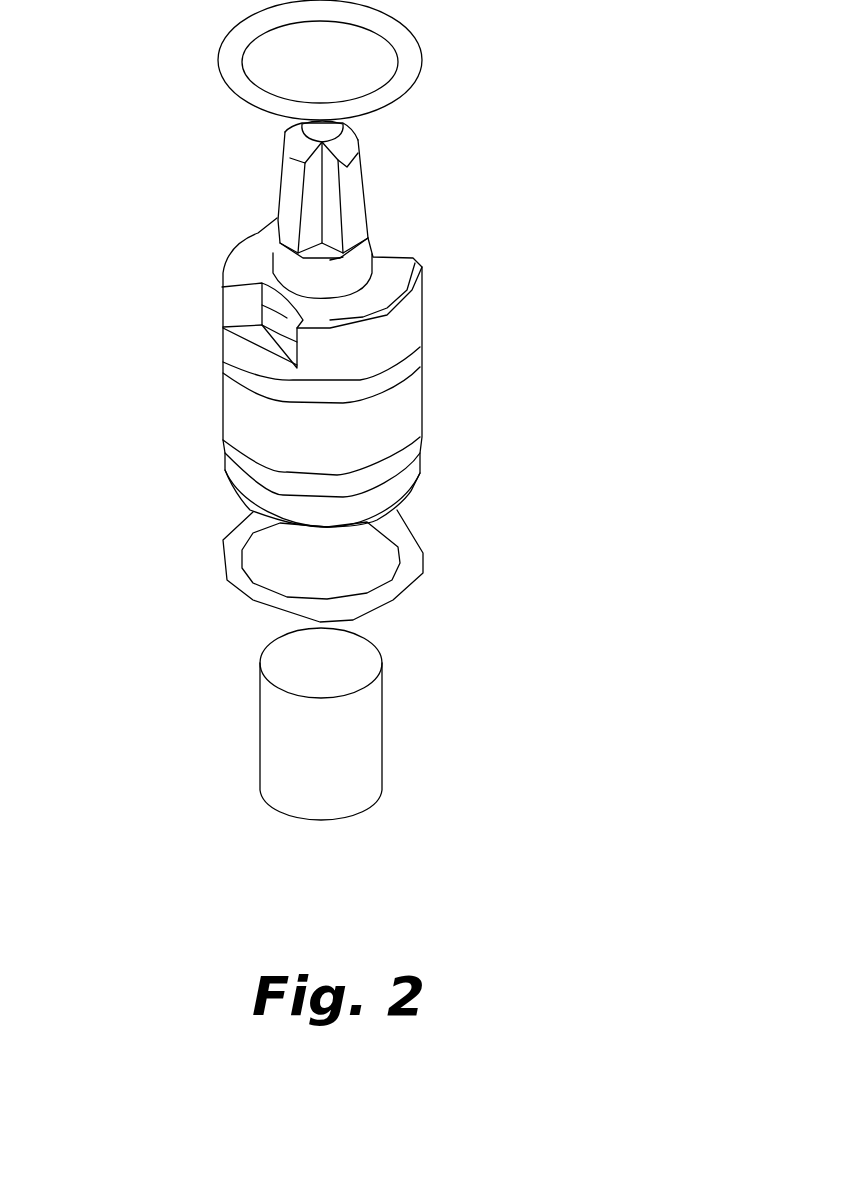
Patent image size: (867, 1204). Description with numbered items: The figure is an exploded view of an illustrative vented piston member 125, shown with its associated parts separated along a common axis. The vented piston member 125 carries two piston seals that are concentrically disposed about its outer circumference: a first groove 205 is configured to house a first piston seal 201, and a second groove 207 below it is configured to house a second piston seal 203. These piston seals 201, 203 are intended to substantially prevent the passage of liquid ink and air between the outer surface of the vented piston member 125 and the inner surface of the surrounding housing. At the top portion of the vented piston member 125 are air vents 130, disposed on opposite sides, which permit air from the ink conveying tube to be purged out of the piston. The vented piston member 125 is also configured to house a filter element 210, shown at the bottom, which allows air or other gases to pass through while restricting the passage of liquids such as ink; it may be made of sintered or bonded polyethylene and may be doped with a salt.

The vented piston member 125 is at (472, 395).
The air vent 130 is at (280, 328).
The first piston seal 201 is at (414, 60).
The second piston seal 203 is at (232, 562).
The first groove 205 is at (232, 357).
The second groove 207 is at (232, 450).
The filter element 210 is at (322, 752).